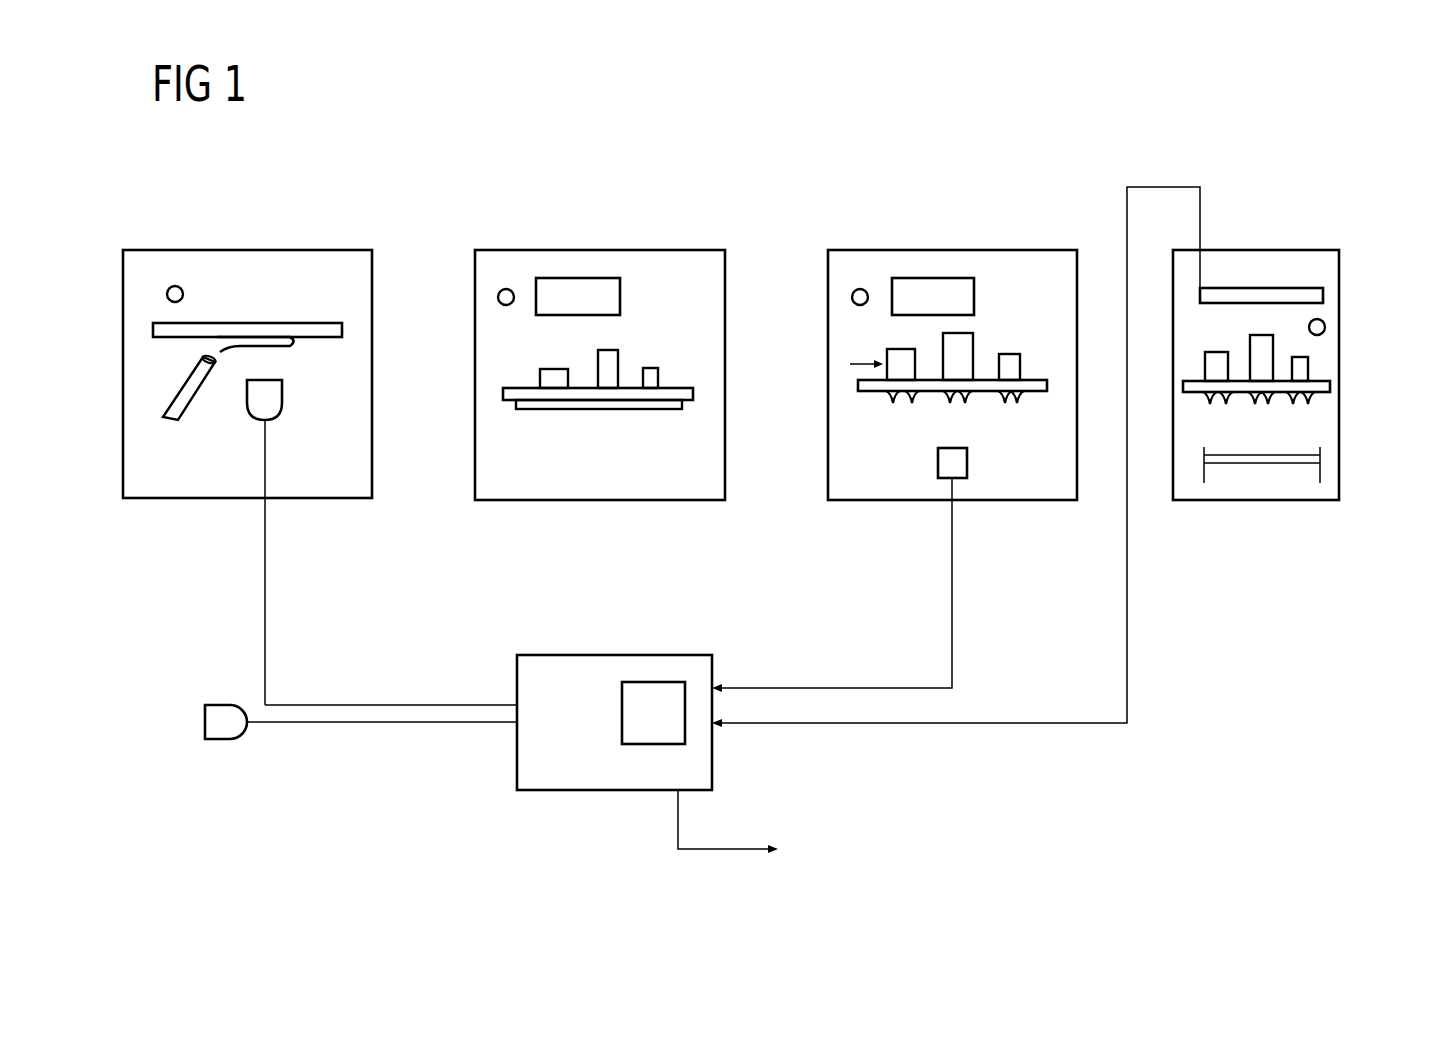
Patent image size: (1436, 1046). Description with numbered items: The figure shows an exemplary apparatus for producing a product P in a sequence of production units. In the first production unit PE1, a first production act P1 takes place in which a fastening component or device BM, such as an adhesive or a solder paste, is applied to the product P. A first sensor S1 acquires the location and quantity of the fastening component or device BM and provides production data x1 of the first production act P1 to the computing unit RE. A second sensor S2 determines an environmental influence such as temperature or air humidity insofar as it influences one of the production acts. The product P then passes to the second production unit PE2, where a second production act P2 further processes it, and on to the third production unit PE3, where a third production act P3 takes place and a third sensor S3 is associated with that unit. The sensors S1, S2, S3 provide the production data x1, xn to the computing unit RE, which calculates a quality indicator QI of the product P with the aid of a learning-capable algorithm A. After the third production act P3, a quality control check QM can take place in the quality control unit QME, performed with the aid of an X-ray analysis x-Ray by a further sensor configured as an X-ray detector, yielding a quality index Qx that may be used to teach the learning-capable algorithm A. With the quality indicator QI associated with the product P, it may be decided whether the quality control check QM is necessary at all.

The first production unit PE1 is at (238, 250).
The second production unit PE2 is at (595, 250).
The third production unit PE3 is at (950, 250).
The quality control unit QME is at (1242, 250).
The first production act P1 is at (167, 294).
The second production act P2 is at (498, 297).
The third production act P3 is at (852, 297).
The product P is at (312, 323).
The fastening component or device BM is at (282, 347).
The first sensor S1 is at (268, 422).
The second sensor S2 is at (218, 705).
The third sensor S3 is at (967, 463).
The quality control check QM is at (1325, 327).
The X-ray analysis x-Ray is at (1320, 456).
The computing unit RE is at (648, 655).
The learning-capable algorithm A is at (643, 745).
The quality indicator QI is at (746, 829).
The quality index Qx is at (956, 476).
The production data x1 is at (391, 688).
The production data xn is at (382, 742).